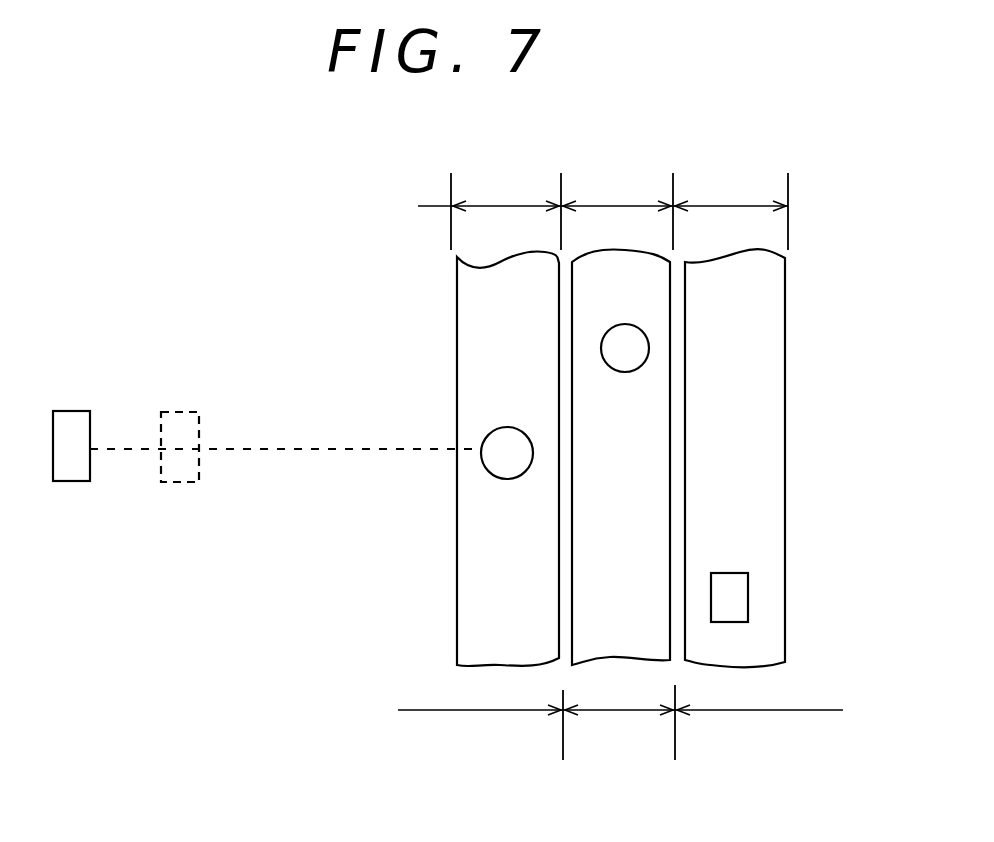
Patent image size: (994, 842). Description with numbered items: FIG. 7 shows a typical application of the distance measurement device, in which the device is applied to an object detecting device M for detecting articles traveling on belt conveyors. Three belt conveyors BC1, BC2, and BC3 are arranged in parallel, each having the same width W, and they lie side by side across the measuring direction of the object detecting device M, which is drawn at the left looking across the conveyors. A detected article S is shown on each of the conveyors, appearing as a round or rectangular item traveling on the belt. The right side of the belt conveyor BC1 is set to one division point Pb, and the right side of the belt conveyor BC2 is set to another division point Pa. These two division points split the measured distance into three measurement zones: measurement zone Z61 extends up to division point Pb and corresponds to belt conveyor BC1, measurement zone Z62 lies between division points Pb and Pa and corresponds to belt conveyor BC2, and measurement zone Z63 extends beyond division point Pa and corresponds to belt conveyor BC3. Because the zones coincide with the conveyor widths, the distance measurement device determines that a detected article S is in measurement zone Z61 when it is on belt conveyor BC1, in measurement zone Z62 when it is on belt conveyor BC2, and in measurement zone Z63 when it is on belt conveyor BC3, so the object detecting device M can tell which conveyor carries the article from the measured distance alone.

The belt conveyor BC1 is at (467, 574).
The belt conveyor BC2 is at (660, 473).
The belt conveyor BC3 is at (776, 548).
The detected article S is at (507, 427).
The width W is at (603, 211).
The object detecting device M is at (261, 472).
The measurement zone Z61 is at (480, 727).
The measurement zone Z62 is at (619, 729).
The measurement zone Z63 is at (759, 730).
The division point Pb is at (564, 747).
The division point Pa is at (673, 745).